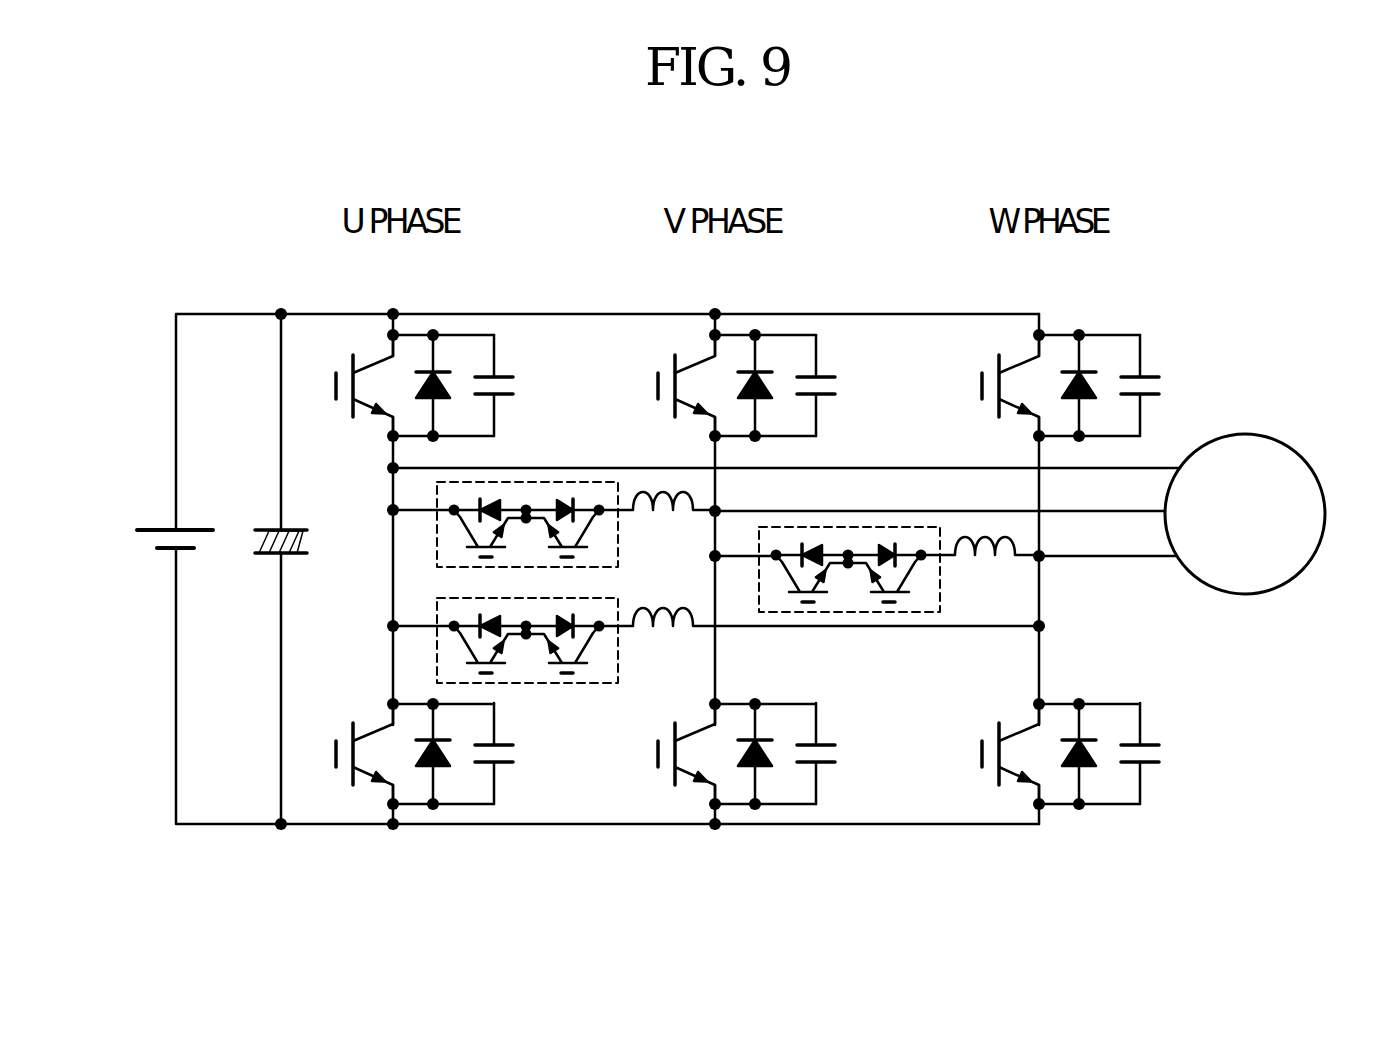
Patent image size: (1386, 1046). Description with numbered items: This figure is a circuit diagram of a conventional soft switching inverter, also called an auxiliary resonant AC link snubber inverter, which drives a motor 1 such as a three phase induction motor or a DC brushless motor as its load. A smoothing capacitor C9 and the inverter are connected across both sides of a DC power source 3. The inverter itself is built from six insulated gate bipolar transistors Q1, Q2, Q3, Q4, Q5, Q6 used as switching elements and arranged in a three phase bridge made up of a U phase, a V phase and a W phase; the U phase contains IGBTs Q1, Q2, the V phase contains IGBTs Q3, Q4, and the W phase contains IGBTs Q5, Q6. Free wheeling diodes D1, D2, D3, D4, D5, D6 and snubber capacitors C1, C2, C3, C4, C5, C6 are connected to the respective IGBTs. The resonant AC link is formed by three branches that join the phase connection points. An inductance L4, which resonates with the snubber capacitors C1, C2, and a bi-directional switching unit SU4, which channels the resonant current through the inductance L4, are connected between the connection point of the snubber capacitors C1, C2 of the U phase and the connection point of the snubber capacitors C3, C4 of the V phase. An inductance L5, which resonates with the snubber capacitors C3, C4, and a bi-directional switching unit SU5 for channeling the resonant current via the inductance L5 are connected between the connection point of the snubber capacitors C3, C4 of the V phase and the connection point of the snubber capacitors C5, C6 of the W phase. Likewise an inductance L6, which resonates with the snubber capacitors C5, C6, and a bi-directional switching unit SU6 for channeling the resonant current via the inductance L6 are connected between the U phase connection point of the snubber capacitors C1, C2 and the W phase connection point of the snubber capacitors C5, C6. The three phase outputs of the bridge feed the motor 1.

The motor 1 is at (1288, 583).
The DC power source 3 is at (167, 528).
The IGBT Q1 is at (367, 355).
The IGBT Q2 is at (365, 782).
The IGBT Q3 is at (686, 348).
The IGBT Q4 is at (686, 801).
The IGBT Q5 is at (1010, 348).
The IGBT Q6 is at (1010, 801).
The free wheeling diode D1 is at (436, 370).
The free wheeling diode D2 is at (445, 773).
The free wheeling diode D3 is at (757, 348).
The free wheeling diode D4 is at (757, 801).
The free wheeling diode D5 is at (1081, 348).
The free wheeling diode D6 is at (1081, 801).
The snubber capacitor C1 is at (505, 376).
The snubber capacitor C2 is at (503, 765).
The snubber capacitor C3 is at (823, 348).
The snubber capacitor C4 is at (823, 801).
The snubber capacitor C5 is at (1147, 348).
The snubber capacitor C6 is at (1147, 801).
The smoothing capacitor C9 is at (275, 528).
The bi-directional switching unit SU4 is at (549, 482).
The bi-directional switching unit SU5 is at (857, 527).
The bi-directional switching unit SU6 is at (547, 684).
The inductance L4 is at (672, 526).
The inductance L5 is at (994, 571).
The inductance L6 is at (672, 642).